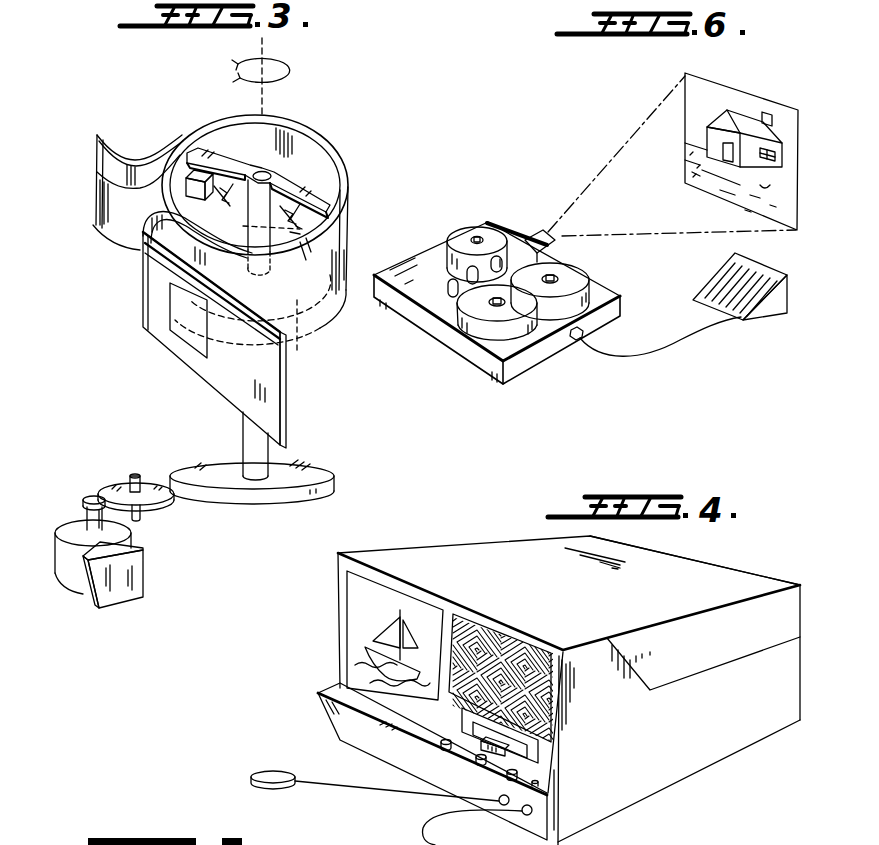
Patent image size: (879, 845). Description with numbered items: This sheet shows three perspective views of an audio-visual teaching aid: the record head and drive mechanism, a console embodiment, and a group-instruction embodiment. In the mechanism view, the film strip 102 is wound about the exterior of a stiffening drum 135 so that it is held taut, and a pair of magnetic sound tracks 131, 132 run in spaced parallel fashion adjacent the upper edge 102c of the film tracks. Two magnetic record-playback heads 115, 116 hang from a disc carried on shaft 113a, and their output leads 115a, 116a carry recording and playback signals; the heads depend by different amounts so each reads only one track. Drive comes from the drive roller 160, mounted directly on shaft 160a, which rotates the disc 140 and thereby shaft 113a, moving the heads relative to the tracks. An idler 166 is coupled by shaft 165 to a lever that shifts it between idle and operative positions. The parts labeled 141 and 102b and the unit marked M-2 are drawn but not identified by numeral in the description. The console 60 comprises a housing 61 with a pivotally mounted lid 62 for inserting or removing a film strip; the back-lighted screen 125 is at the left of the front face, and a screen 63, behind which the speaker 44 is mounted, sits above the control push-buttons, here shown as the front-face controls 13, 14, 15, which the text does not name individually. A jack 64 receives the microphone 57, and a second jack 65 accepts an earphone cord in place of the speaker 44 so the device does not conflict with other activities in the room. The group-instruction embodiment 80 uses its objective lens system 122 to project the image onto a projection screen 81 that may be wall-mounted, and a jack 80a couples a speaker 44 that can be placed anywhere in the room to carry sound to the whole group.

In FIG. 3, the sound track 131 is at (117, 162).
In FIG. 3, the sound track 132 is at (112, 180).
In FIG. 3, the magnetic record-playback head 115 is at (186, 180).
In FIG. 3, the output lead 115a is at (215, 200).
In FIG. 3, the upper edge of film tracks 102c is at (243, 235).
In FIG. 3, the shaft 113a is at (268, 174).
In FIG. 3, the rotating arm 141 is at (297, 187).
In FIG. 3, the output lead 116a is at (300, 197).
In FIG. 3, the magnetic record-playback head 116 is at (306, 236).
In FIG. 3, the drum 102b is at (320, 332).
In FIG. 3, the stiffening drum 135 is at (298, 351).
In FIG. 3, the film strip 102 is at (210, 385).
In FIG. 3, the disc 140 is at (300, 467).
In FIG. 3, the drive roller 160 is at (96, 497).
In FIG. 3, the idler 166 is at (115, 483).
In FIG. 3, the shaft 165 is at (140, 476).
In FIG. 3, the shaft 160a is at (86, 515).
In FIG. 3, the motor M-2 is at (56, 545).
In FIG. 6, the objective lens system 122 is at (541, 231).
In FIG. 6, the projection screen 81 is at (748, 92).
In FIG. 6, the speaker 44 is at (743, 320).
In FIG. 6, the group instruction embodiment 80 is at (648, 352).
In FIG. 6, the jack 80a is at (575, 341).
In FIG. 4, the console 60 is at (500, 523).
In FIG. 4, the lid 62 is at (717, 568).
In FIG. 4, the housing 61 is at (735, 752).
In FIG. 4, the back-lighted screen 125 is at (348, 602).
In FIG. 4, the screen 63 is at (552, 700).
In FIG. 4, the control knob 13 is at (446, 750).
In FIG. 4, the control knob 15 is at (481, 765).
In FIG. 4, the control knob 14 is at (510, 779).
In FIG. 4, the jack 64 is at (512, 798).
In FIG. 4, the second jack 65 is at (522, 813).
In FIG. 4, the microphone 57 is at (277, 772).